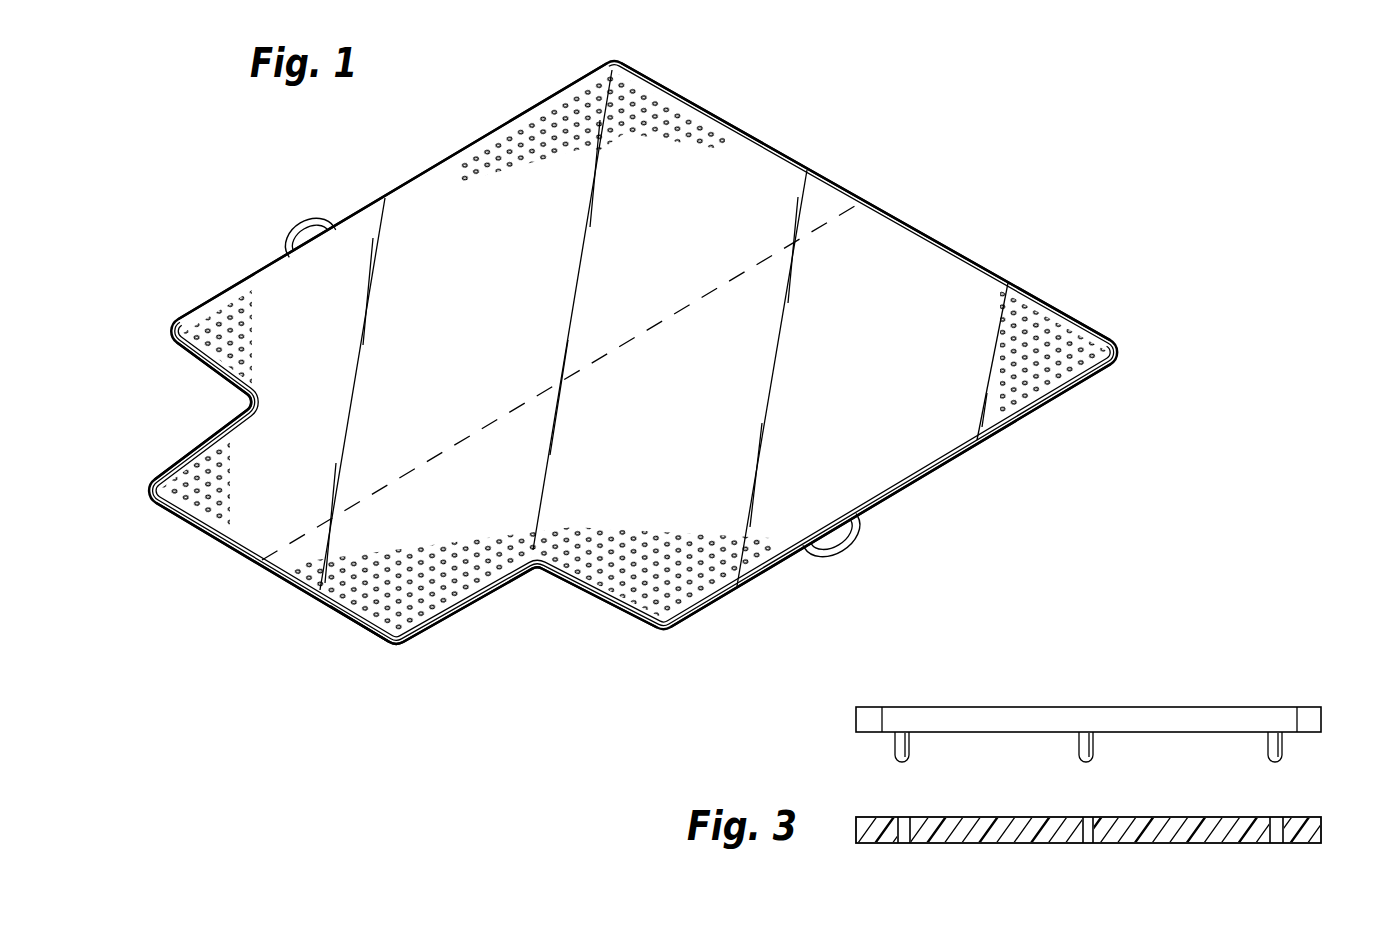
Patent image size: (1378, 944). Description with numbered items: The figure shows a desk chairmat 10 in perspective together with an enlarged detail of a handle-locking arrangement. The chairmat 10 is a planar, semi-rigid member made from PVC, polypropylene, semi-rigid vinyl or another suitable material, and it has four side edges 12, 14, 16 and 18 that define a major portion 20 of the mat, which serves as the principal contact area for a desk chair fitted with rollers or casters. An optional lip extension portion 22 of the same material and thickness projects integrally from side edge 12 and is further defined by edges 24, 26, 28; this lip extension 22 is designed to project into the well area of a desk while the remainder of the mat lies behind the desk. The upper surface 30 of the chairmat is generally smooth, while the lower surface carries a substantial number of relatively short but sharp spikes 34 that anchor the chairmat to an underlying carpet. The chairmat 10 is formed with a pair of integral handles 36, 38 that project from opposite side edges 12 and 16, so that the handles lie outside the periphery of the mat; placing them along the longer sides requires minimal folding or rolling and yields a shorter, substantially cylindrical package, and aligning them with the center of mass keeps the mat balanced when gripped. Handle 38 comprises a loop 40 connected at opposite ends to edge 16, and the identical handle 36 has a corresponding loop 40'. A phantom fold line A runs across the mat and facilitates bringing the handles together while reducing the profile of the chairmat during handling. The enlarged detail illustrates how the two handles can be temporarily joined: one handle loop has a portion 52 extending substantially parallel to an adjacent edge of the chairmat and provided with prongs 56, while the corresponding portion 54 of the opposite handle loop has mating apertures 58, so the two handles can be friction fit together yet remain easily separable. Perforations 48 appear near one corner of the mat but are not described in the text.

In FIG. 1, the desk chairmat 10 is at (886, 190).
In FIG. 1, the side edge 12 is at (465, 150).
In FIG. 1, the side edge 14 is at (970, 257).
In FIG. 1, the side edge 16 is at (998, 440).
In FIG. 1, the side edge 18 is at (620, 610).
In FIG. 1, the major portion 20 is at (719, 356).
In FIG. 1, the lip extension portion 22 is at (297, 503).
In FIG. 1, the edge 24 is at (220, 425).
In FIG. 1, the edge 26 is at (273, 569).
In FIG. 1, the edge 28 is at (445, 623).
In FIG. 1, the upper surface 30 is at (563, 125).
In FIG. 1, the spikes 34 is at (517, 530).
In FIG. 1, the handle 36 is at (294, 210).
In FIG. 1, the handle 38 is at (874, 552).
In FIG. 1, the loop 40 is at (821, 572).
In FIG. 1, the loop 40' is at (276, 224).
In FIG. 1, the perforations 48 is at (1022, 398).
In FIG. 1, the phantom fold line A is at (527, 393).
In FIG. 3, the parallel portion 52 is at (1190, 713).
In FIG. 3, the corresponding portion 54 is at (1165, 825).
In FIG. 3, the prongs 56 is at (910, 748).
In FIG. 3, the apertures 58 is at (900, 822).